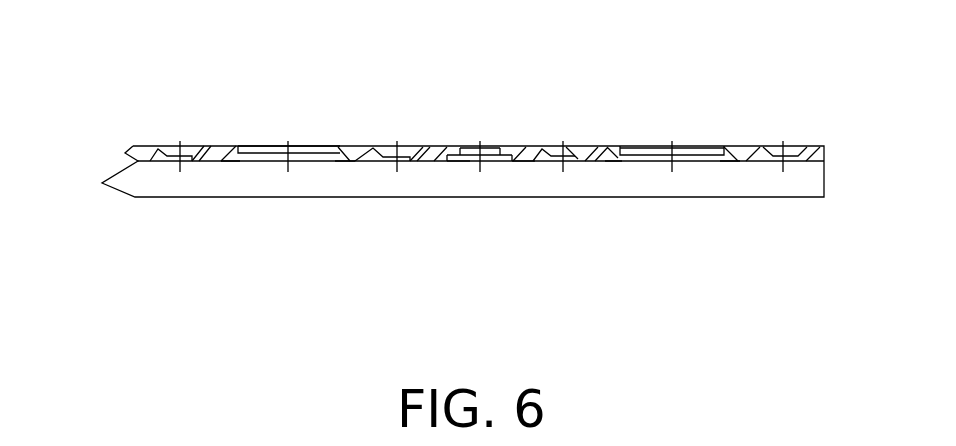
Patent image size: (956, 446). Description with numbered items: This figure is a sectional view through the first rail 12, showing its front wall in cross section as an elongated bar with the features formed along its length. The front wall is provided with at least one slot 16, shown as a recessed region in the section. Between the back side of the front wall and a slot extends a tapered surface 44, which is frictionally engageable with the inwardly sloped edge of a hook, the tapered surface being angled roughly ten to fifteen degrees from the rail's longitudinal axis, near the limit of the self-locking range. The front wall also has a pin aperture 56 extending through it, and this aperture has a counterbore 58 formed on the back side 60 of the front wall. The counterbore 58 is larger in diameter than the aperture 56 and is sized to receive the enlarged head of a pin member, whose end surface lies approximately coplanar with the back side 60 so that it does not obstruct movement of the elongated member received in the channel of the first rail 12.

The first rail 12 is at (597, 148).
The slot 16 is at (255, 150).
The tapered surface 44 is at (232, 162).
The pin aperture 56 is at (470, 150).
The counterbore 58 is at (453, 162).
The back side 60 is at (528, 163).